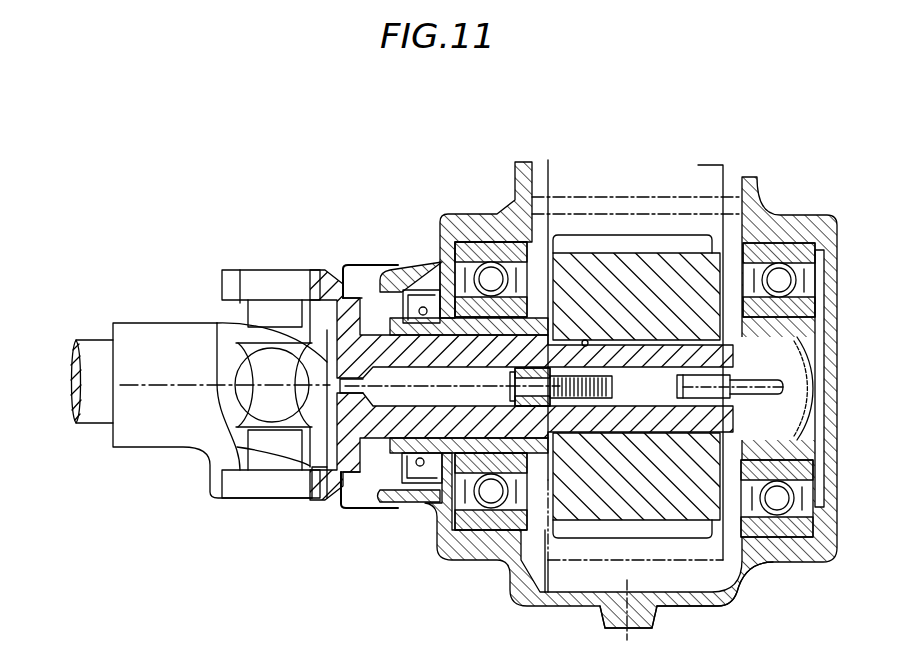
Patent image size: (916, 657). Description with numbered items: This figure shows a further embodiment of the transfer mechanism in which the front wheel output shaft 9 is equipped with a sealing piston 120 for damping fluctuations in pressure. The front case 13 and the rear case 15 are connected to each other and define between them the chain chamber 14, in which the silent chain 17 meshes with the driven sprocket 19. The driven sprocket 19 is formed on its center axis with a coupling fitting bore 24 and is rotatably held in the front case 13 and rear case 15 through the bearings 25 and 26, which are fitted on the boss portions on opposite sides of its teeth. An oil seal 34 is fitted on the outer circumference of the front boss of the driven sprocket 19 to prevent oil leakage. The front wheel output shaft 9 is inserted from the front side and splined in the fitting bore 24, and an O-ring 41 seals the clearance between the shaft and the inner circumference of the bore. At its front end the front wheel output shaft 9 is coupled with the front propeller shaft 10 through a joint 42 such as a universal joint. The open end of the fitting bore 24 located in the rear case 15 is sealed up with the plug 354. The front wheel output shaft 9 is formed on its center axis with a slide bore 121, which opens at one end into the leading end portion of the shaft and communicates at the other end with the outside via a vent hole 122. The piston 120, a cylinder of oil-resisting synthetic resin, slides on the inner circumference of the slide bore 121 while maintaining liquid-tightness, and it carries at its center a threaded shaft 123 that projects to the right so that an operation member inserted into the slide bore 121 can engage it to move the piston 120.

The front wheel output shaft 9 is at (627, 352).
The front propeller shaft 10 is at (105, 340).
The front case 13 is at (552, 606).
The chain chamber 14 is at (624, 578).
The rear case 15 is at (714, 606).
The silent chain 17 is at (548, 165).
The driven sprocket 19 is at (662, 262).
The fitting bore 24 is at (586, 341).
The bearing 25 is at (458, 247).
The bearing 26 is at (797, 258).
The oil seal 34 is at (398, 304).
The O-ring 41 is at (430, 290).
The joint 42 is at (260, 500).
The sealing piston 120 is at (575, 406).
The slide bore 121 is at (390, 425).
The vent hole 122 is at (308, 445).
The threaded shaft 123 is at (626, 408).
The plug 354 is at (810, 357).